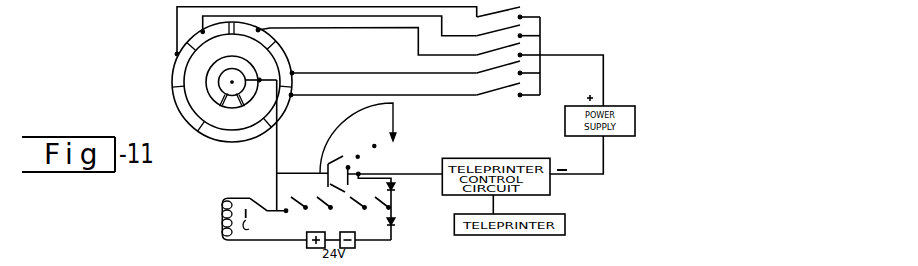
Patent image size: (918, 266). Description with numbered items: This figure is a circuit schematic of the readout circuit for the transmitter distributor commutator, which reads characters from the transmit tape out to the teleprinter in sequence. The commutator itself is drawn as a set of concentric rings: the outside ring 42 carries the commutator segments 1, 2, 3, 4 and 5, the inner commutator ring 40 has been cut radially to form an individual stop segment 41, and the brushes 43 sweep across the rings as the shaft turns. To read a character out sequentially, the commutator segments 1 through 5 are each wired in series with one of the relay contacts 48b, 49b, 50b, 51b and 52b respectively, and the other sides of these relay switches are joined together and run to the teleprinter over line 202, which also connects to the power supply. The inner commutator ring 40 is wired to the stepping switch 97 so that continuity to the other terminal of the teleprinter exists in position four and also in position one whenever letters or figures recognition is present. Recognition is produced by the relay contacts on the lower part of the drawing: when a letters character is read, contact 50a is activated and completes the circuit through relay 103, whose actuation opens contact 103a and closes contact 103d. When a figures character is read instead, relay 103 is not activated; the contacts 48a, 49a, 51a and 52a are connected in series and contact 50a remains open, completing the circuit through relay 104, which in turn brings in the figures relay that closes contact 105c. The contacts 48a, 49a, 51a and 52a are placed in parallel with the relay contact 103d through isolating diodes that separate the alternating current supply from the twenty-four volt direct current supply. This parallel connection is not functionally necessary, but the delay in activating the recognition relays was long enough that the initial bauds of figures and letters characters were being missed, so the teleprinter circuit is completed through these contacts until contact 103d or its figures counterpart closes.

The commutator segment 1 is at (326, 40).
The commutator segment 2 is at (339, 28).
The commutator segment 3 is at (362, 40).
The commutator segment 4 is at (378, 64).
The commutator segment 5 is at (379, 101).
The inner commutator ring 40 is at (224, 58).
The stop segment 41 is at (231, 106).
The outside ring 42 is at (206, 142).
The brushes 43 is at (247, 124).
The relay contact 48a is at (394, 203).
The relay contact 48b is at (486, 21).
The relay contact 49a is at (357, 206).
The relay contact 49b is at (486, 39).
The relay contact 50a is at (261, 197).
The relay contact 50b is at (486, 57).
The relay contact 51a is at (325, 205).
The relay contact 51b is at (486, 76).
The relay contact 52a is at (299, 205).
The relay contact 52b is at (486, 97).
The stepping switch 97 is at (445, 128).
The relay 103 is at (249, 227).
The relay contact 103a is at (487, 261).
The relay contact 103d is at (328, 186).
The relay 104 is at (222, 223).
The relay contact 105c is at (343, 156).
The line 202 is at (581, 56).